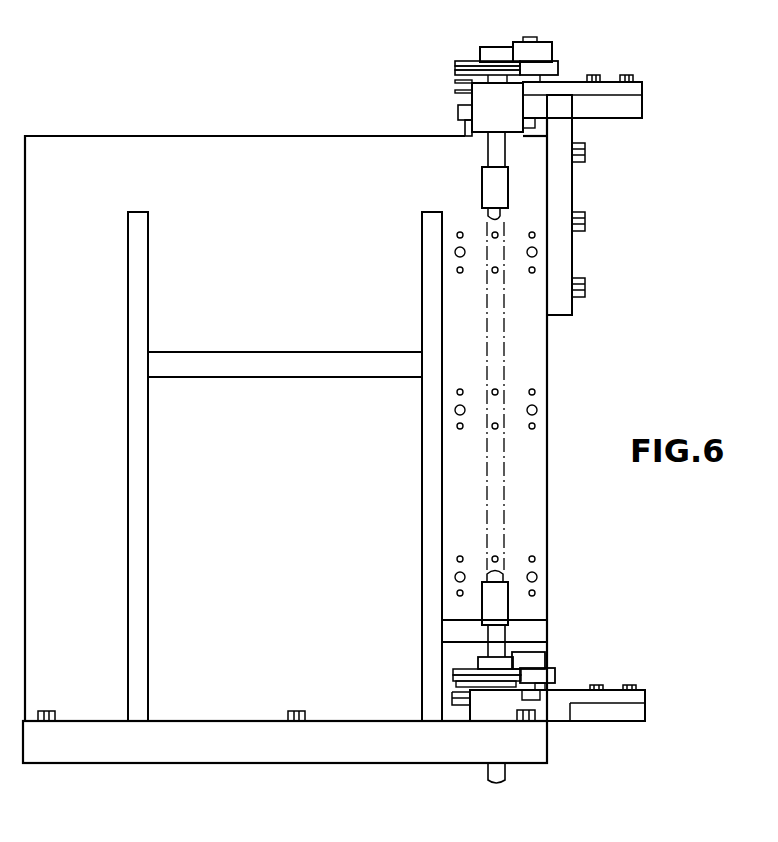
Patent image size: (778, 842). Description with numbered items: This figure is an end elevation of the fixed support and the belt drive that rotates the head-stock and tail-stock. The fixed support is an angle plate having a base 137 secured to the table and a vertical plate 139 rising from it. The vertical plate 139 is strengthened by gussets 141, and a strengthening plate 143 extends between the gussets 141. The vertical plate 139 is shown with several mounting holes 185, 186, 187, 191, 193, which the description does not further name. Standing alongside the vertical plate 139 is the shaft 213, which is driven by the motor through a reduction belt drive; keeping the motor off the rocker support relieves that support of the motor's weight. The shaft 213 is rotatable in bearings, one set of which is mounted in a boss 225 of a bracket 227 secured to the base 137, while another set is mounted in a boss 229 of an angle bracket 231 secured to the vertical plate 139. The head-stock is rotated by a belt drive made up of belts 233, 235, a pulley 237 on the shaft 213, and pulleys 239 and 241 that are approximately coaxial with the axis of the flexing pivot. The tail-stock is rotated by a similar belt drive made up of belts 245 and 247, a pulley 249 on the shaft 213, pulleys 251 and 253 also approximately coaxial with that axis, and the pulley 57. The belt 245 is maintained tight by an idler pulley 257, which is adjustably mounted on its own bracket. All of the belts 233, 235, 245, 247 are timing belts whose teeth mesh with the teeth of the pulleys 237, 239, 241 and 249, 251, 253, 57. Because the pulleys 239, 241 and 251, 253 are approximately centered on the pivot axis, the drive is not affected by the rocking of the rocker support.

The pulley 57 is at (465, 124).
The base 137 is at (244, 733).
The vertical plate 139 is at (532, 360).
The gussets 141 is at (142, 302).
The strengthening plate 143 is at (298, 353).
The mounting hole 185 is at (537, 235).
The mounting hole 186 is at (497, 275).
The mounting hole 187 is at (539, 253).
The mounting hole 191 is at (458, 233).
The mounting hole 193 is at (455, 252).
The shaft 213 is at (496, 150).
The boss 225 is at (555, 676).
The bracket 227 is at (638, 710).
The boss 229 is at (483, 122).
The angle bracket 231 is at (637, 110).
The belt 233 is at (452, 670).
The belt 235 is at (455, 699).
The pulley 237 is at (485, 668).
The pulley 239 is at (455, 675).
The pulley 241 is at (455, 683).
The belt 245 is at (458, 71).
The belt 247 is at (458, 87).
The pulley 249 is at (478, 60).
The pulley 251 is at (465, 64).
The pulley 253 is at (460, 98).
The idler pulley 257 is at (540, 50).